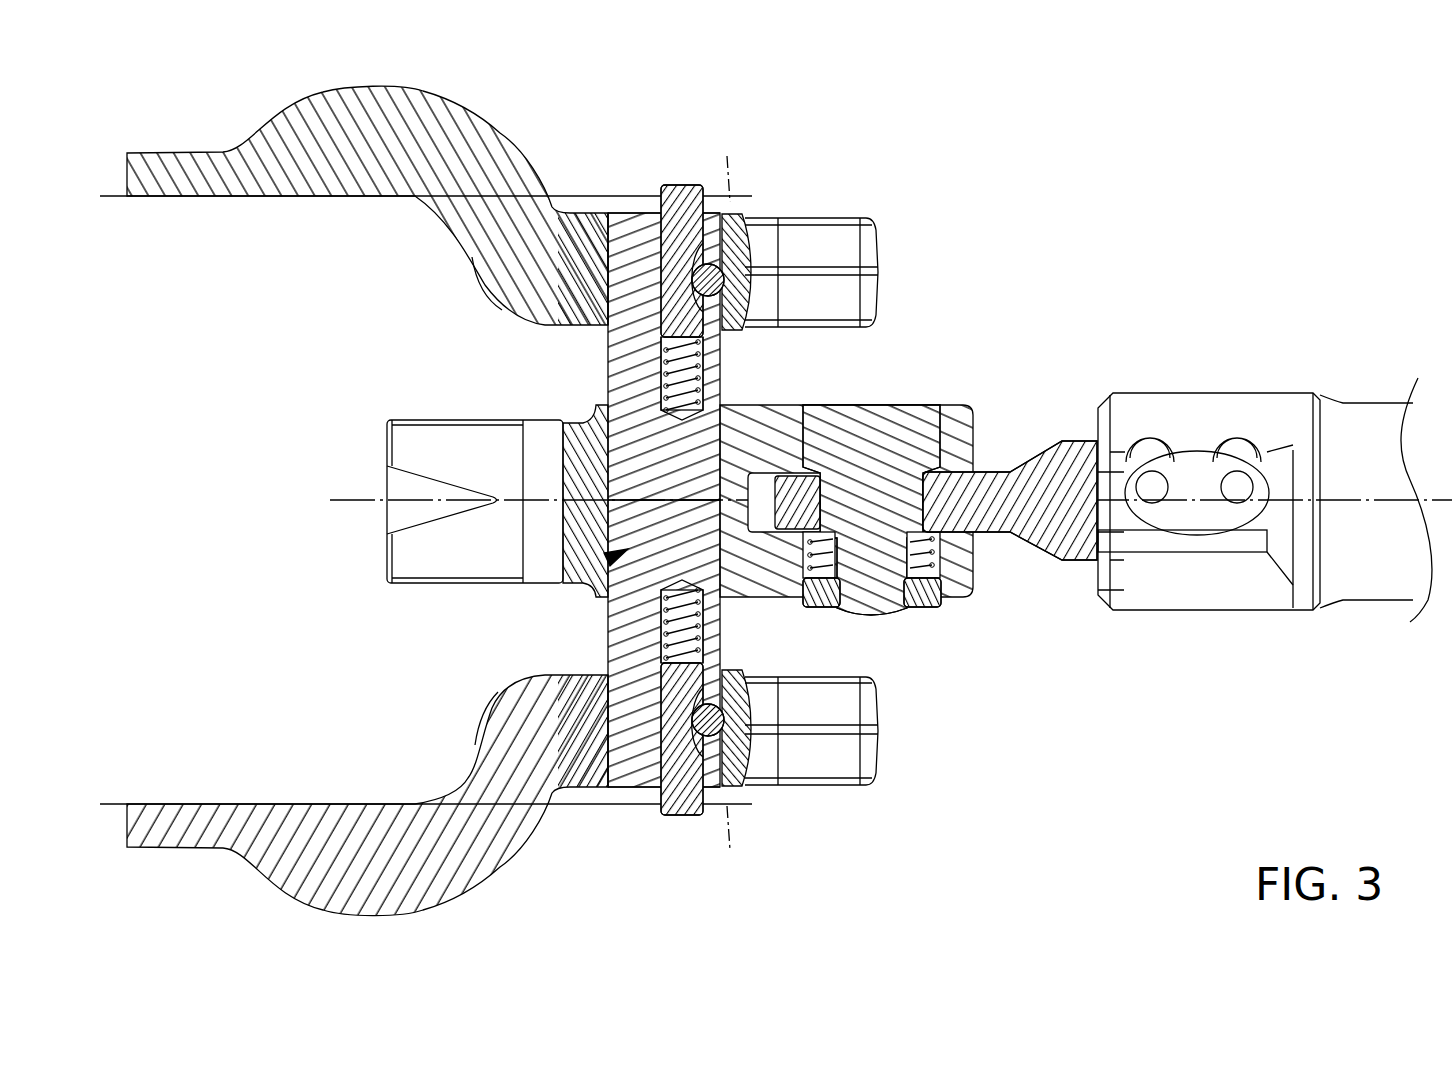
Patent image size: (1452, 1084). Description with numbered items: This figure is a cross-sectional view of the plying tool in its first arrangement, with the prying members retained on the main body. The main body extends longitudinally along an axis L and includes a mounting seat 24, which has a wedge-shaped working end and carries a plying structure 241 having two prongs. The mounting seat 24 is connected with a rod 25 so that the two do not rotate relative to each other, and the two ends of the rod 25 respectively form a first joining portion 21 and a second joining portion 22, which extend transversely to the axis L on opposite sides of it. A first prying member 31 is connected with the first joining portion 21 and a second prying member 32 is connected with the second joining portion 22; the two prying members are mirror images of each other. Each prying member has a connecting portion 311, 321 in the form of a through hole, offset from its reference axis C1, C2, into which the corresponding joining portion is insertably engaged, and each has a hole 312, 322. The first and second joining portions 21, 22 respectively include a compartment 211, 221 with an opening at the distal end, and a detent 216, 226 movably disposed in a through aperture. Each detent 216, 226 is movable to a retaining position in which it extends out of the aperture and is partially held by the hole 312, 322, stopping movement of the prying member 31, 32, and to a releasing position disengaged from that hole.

The first joining portion 21 is at (624, 633).
The compartment 211 is at (702, 641).
The detent 216 is at (727, 723).
The second joining portion 22 is at (627, 367).
The compartment 221 is at (700, 362).
The detent 226 is at (728, 276).
The mounting seat 24 is at (776, 420).
The plying structure 241 is at (415, 443).
The rod 25 is at (607, 559).
The first prying member 31 is at (518, 880).
The connecting portion 311 is at (612, 672).
The hole 312 is at (758, 713).
The second prying member 32 is at (518, 120).
The connecting portion 321 is at (612, 330).
The hole 322 is at (750, 285).
The reference axis C1 is at (738, 849).
The reference axis C2 is at (738, 158).
The axis L is at (345, 506).